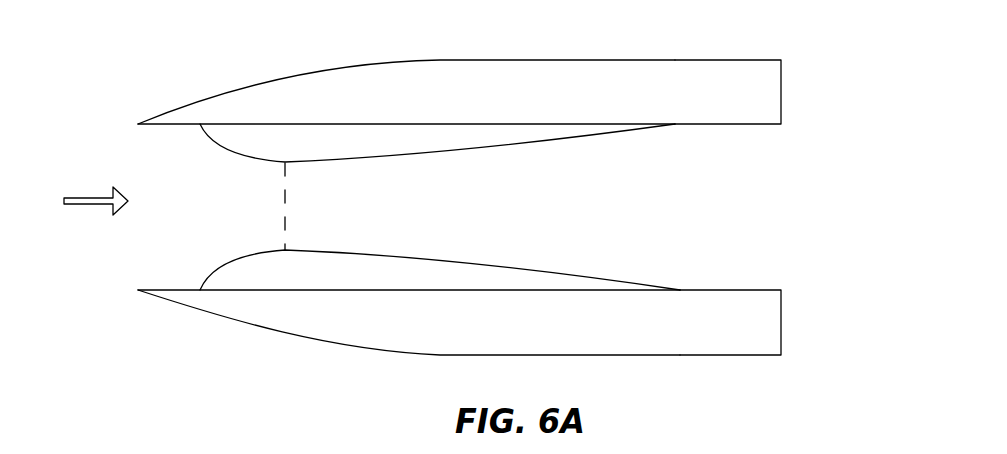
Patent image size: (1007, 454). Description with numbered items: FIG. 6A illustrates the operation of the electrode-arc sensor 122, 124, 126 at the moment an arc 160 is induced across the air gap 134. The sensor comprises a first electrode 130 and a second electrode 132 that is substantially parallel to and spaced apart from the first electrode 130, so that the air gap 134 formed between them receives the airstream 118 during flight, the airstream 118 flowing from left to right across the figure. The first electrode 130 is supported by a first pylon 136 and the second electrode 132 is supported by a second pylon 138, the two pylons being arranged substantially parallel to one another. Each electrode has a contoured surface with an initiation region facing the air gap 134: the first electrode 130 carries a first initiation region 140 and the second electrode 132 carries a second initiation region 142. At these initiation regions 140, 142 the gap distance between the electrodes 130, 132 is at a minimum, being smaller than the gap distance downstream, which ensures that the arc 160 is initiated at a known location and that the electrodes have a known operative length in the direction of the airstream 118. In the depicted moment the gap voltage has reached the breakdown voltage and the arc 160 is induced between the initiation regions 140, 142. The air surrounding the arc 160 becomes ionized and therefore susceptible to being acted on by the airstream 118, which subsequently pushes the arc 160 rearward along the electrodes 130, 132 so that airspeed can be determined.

The airstream 118 is at (80, 201).
The electrode-arc sensor 122 is at (542, 185).
The electrode-arc sensor 124 is at (542, 185).
The electrode-arc sensor 126 is at (542, 185).
The first electrode 130 is at (494, 290).
The second electrode 132 is at (494, 126).
The air gap 134 is at (472, 214).
The first pylon 136 is at (782, 323).
The second pylon 138 is at (782, 92).
The first initiation region 140 is at (283, 249).
The second initiation region 142 is at (283, 165).
The arc 160 is at (288, 202).